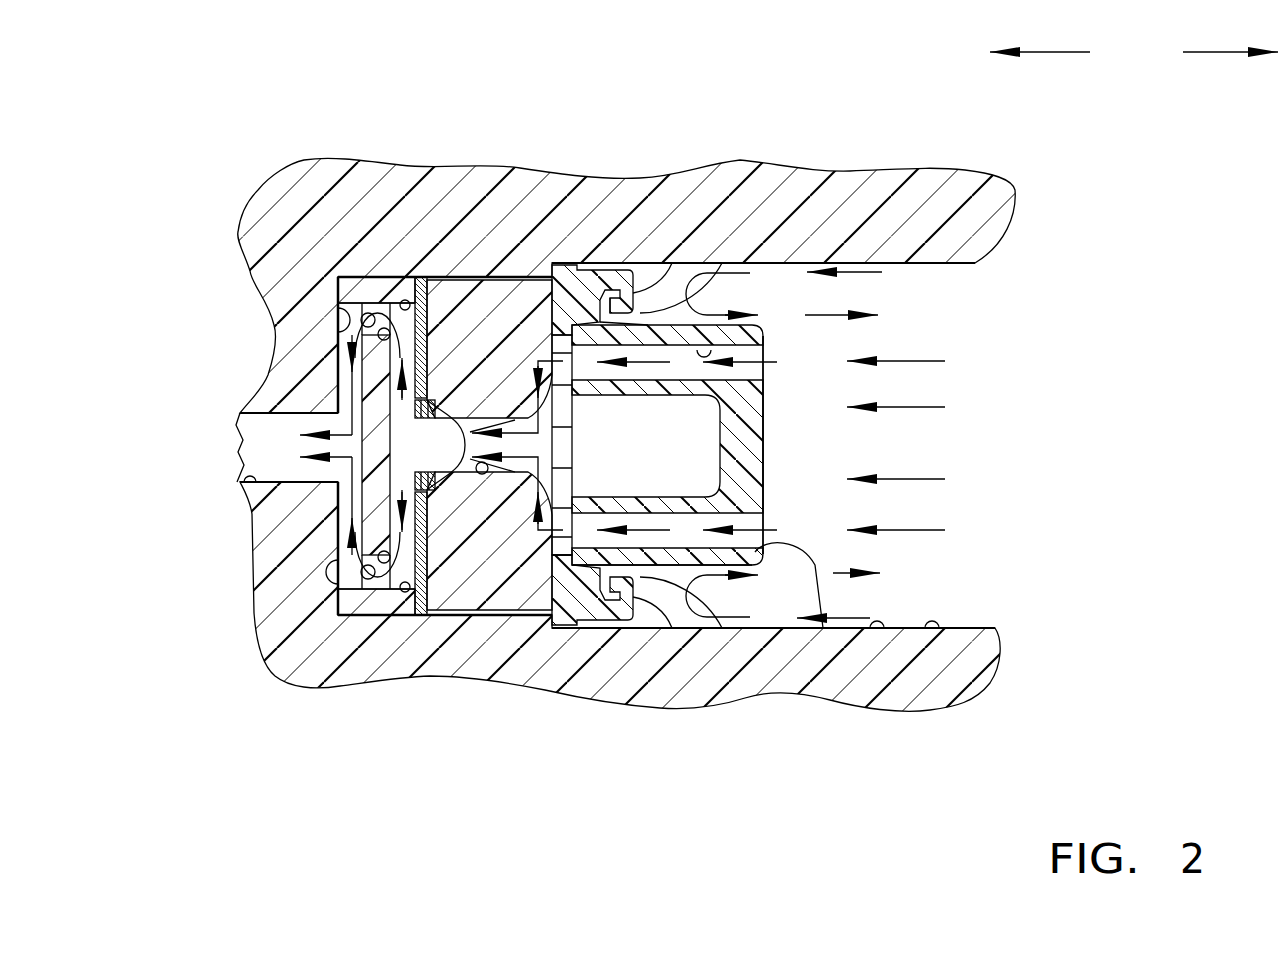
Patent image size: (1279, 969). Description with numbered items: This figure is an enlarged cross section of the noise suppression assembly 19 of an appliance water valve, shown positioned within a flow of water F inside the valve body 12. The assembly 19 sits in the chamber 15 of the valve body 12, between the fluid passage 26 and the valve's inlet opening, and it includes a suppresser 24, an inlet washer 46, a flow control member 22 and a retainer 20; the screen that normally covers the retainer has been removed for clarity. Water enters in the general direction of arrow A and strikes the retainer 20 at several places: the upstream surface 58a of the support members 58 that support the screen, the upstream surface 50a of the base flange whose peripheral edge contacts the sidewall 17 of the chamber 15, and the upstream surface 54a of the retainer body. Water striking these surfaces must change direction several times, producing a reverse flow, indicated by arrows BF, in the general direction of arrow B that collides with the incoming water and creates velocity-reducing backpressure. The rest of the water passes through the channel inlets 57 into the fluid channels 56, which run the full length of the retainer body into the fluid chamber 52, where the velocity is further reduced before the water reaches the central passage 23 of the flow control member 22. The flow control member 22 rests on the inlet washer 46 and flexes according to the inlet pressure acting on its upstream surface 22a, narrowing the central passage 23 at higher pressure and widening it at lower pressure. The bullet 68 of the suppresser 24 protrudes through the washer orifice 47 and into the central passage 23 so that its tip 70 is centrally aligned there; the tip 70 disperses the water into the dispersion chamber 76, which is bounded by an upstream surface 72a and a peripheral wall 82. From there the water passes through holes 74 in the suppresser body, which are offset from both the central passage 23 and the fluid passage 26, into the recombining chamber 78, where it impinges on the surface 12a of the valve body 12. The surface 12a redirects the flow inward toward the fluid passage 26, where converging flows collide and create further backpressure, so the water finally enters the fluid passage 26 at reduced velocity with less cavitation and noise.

The valve body 12 is at (306, 199).
The surface 12a is at (340, 313).
The chamber 15 is at (877, 630).
The sidewall 17 is at (932, 632).
The noise suppression assembly 19 is at (798, 347).
The retainer 20 is at (667, 558).
The flow control member 22 is at (488, 560).
The upstream surface 22a is at (598, 290).
The central passage 23 is at (467, 580).
The suppresser 24 is at (345, 620).
The fluid passage 26 is at (240, 478).
The inlet washer 46 is at (422, 592).
The washer orifice 47 is at (432, 595).
The upstream surface of base flange 50a is at (742, 320).
The fluid chamber 52 is at (556, 605).
The upstream surface of body 54a is at (767, 487).
The fluid channels 56 is at (762, 300).
The channel inlet 57 is at (820, 630).
The support members 58 is at (613, 608).
The upstream surface of support member 58a is at (692, 298).
The bullet 68 is at (440, 400).
The tip 70 is at (497, 408).
The upstream surface 72a is at (393, 352).
The holes 74 is at (360, 590).
The dispersion chamber 76 is at (350, 598).
The recombining chamber 78 is at (352, 565).
The peripheral wall 82 is at (428, 280).
The arrow A is at (1050, 52).
The arrow B is at (1218, 52).
The flow of water F is at (910, 360).
The bypass flow BF is at (810, 315).